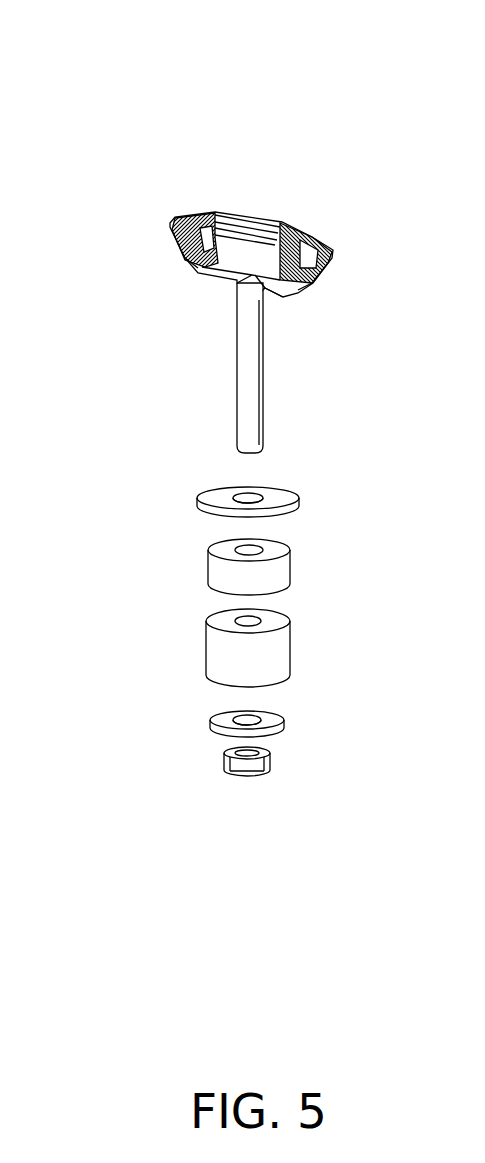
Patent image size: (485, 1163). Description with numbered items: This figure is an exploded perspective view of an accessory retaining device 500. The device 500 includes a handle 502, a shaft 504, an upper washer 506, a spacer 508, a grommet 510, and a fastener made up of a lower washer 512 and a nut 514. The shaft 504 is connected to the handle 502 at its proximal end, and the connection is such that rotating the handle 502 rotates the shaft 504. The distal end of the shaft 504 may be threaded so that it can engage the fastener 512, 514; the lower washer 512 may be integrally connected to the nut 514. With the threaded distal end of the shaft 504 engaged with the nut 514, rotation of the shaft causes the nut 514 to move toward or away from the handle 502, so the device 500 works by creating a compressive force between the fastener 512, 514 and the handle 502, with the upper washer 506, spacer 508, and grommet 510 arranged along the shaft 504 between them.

The accessory retaining device 500 is at (148, 62).
The handle 502 is at (170, 225).
The shaft 504 is at (237, 345).
The upper washer 506 is at (200, 498).
The spacer 508 is at (208, 553).
The grommet 510 is at (206, 647).
The lower washer 512 is at (210, 720).
The nut 514 is at (222, 759).